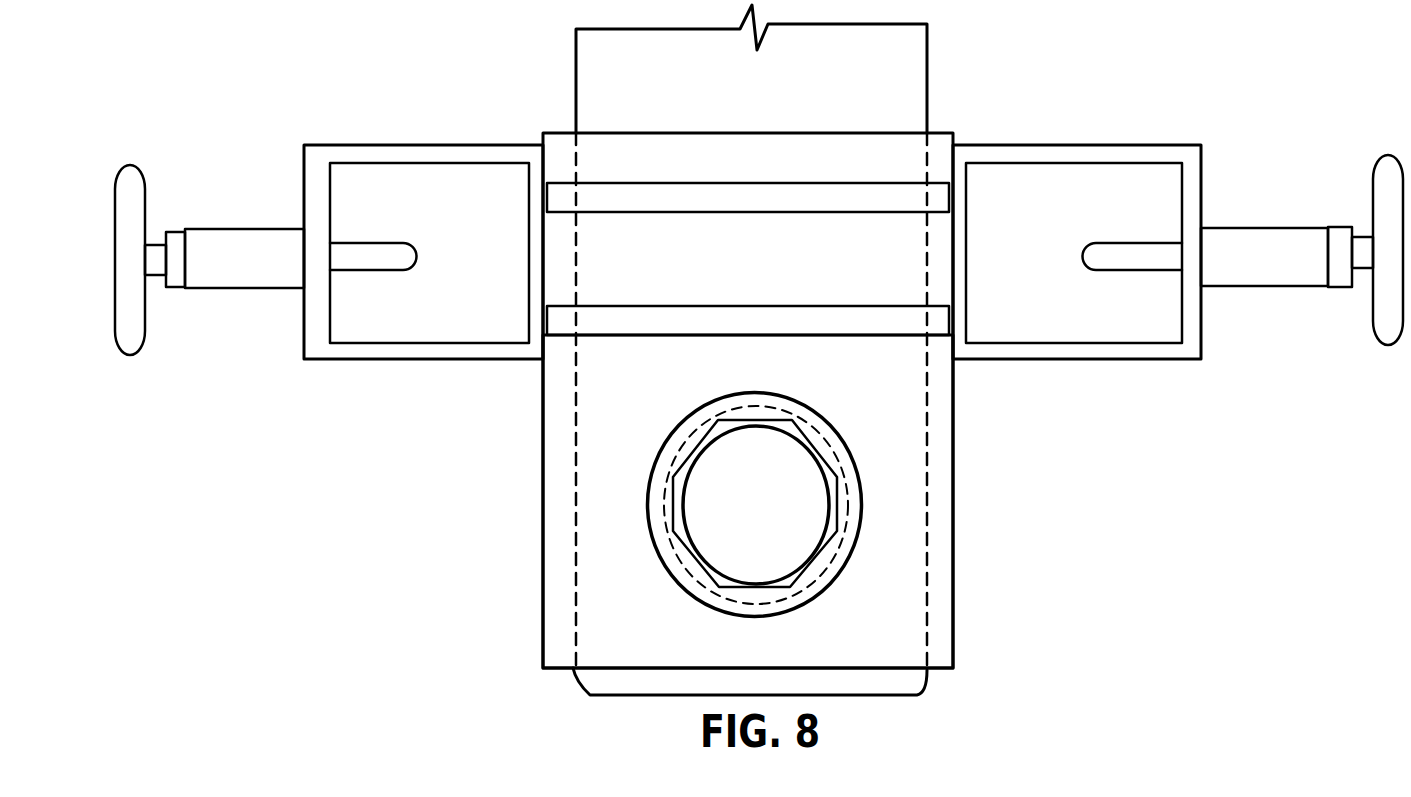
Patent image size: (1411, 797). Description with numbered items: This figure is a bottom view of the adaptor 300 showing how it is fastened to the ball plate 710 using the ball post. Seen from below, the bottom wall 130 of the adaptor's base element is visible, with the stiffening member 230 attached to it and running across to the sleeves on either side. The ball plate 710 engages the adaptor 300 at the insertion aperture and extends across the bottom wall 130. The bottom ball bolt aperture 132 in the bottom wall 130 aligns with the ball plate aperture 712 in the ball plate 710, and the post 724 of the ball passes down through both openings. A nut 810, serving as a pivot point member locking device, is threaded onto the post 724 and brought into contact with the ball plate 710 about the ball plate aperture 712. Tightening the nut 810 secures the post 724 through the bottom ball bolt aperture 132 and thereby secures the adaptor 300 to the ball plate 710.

The adaptor 300 is at (759, 380).
The bottom wall 130 is at (907, 648).
The bottom ball bolt aperture 132 is at (700, 412).
The stiffening member 230 is at (840, 284).
The ball plate 710 is at (865, 89).
The ball plate aperture 712 is at (697, 580).
The post 724 is at (780, 520).
The nut 810 is at (817, 450).